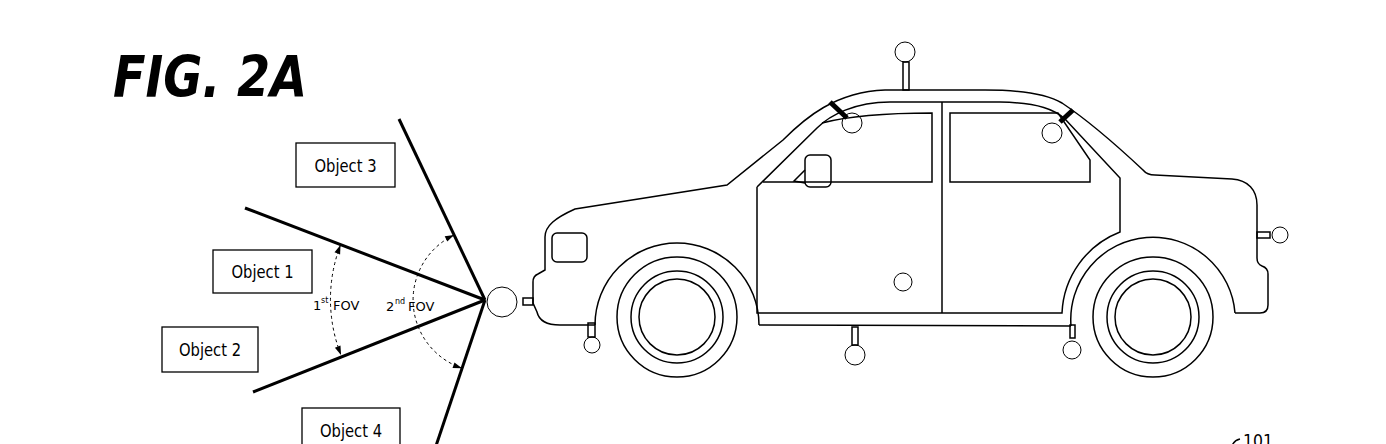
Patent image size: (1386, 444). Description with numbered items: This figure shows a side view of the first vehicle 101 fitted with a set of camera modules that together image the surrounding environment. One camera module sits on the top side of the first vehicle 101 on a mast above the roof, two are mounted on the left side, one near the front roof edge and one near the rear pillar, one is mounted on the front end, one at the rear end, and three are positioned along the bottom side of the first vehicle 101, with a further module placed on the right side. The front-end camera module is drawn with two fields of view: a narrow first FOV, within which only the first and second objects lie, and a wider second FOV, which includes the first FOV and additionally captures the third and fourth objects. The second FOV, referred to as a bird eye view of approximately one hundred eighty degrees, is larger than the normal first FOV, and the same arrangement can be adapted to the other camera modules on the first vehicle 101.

The first vehicle 101 is at (1205, 128).